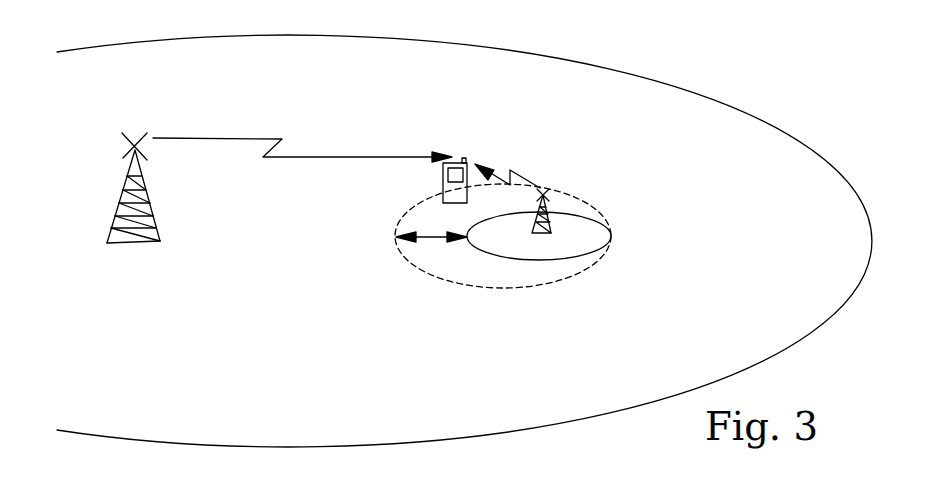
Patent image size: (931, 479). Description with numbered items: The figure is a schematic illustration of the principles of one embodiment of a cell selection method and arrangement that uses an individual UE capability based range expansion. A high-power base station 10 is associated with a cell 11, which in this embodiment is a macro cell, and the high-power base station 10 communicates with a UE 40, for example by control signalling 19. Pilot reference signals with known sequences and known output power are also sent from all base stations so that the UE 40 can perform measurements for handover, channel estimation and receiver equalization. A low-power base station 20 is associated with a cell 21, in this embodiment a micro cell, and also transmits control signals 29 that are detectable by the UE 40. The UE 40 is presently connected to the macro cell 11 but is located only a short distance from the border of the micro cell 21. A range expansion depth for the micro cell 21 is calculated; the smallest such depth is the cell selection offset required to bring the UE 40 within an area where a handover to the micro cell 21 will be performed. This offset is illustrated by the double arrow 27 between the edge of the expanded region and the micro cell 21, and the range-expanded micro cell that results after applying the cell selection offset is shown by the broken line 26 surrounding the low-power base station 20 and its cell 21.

The high-power base station 10 is at (134, 226).
The cell 11 is at (598, 78).
The control signalling 19 is at (253, 138).
The low-power base station 20 is at (546, 190).
The cell 21 is at (593, 240).
The broken line 26 is at (495, 288).
The double arrow 27 is at (427, 247).
The control signals 29 is at (511, 170).
The UE 40 is at (443, 175).